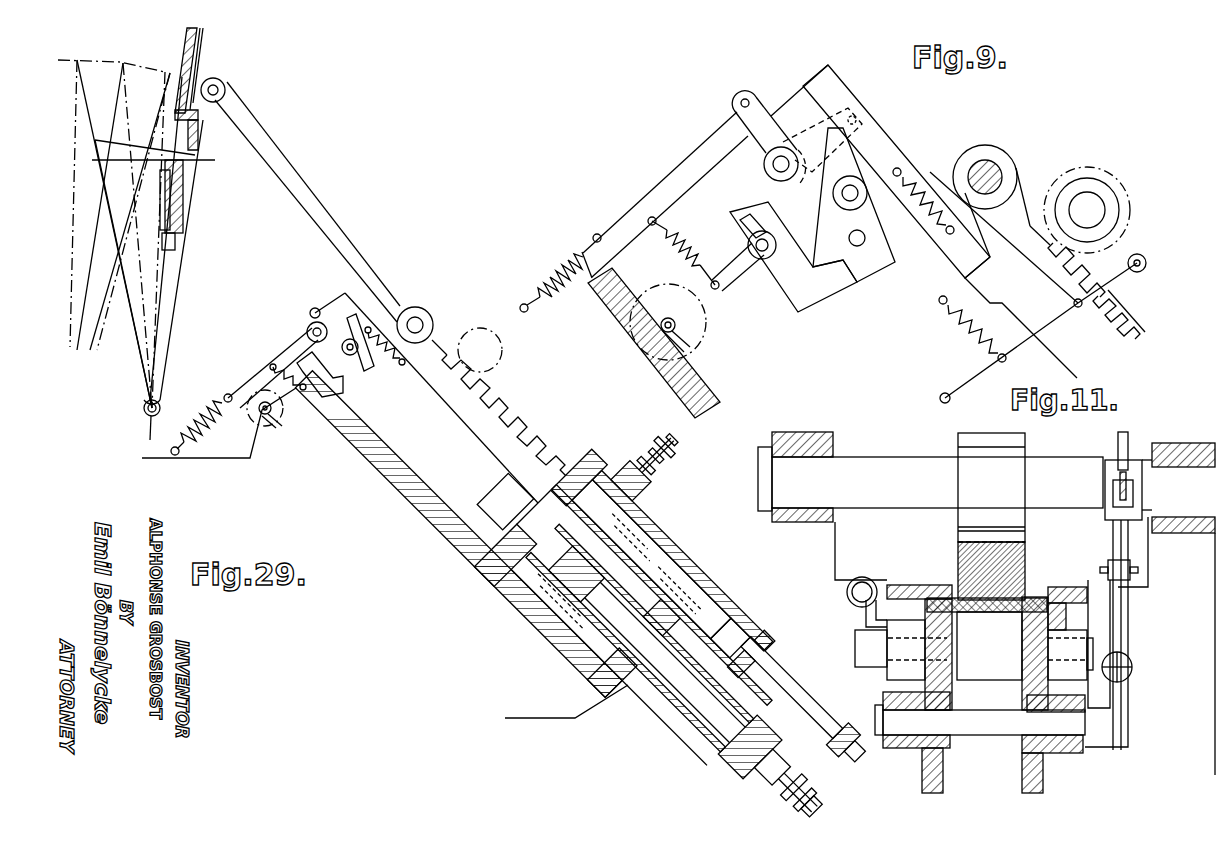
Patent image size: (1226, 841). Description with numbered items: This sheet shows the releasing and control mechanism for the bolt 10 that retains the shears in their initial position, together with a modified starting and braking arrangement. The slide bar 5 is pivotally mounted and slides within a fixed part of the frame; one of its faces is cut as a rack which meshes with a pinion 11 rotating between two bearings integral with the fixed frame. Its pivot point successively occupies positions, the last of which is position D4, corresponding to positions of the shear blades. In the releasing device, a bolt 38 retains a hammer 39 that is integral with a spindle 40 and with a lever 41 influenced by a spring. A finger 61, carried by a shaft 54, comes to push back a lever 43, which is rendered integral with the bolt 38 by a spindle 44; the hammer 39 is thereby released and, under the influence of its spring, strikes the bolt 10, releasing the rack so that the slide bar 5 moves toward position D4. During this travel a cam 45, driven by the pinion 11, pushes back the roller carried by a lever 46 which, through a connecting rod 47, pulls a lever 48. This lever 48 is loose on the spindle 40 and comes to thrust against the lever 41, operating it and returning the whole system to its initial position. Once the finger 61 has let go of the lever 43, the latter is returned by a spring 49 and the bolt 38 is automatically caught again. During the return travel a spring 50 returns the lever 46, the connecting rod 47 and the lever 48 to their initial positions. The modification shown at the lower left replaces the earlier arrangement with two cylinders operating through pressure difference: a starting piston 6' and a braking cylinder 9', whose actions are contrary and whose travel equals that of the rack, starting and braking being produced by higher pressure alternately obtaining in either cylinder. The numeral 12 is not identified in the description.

In FIG. 9, the slide bar 5 is at (1097, 337).
In FIG. 29, the slide bar 5 is at (503, 432).
In FIG. 29, the starting piston 6' is at (738, 590).
In FIG. 29, the braking cylinder 9' is at (576, 569).
In FIG. 9, the bolt 10 is at (884, 250).
In FIG. 11, the bolt 10 is at (970, 653).
In FIG. 9, the pinion 11 is at (1098, 197).
In FIG. 11, the pinion 11 is at (955, 479).
In FIG. 29, the pinion 11 is at (503, 352).
In FIG. 9, the spring 12 is at (560, 258).
In FIG. 9, the bolt 38 is at (745, 232).
In FIG. 9, the hammer 39 is at (815, 295).
In FIG. 9, the spindle 40 is at (778, 146).
In FIG. 29, the spindle 40 is at (373, 335).
In FIG. 9, the lever 41 is at (810, 177).
In FIG. 9, the lever 43 is at (728, 282).
In FIG. 9, the spindle 44 is at (762, 259).
In FIG. 9, the cam 45 is at (1117, 217).
In FIG. 11, the cam 45 is at (1127, 440).
In FIG. 9, the lever 46 is at (1053, 323).
In FIG. 11, the lever 46 is at (1124, 614).
In FIG. 9, the connecting rod 47 is at (1010, 250).
In FIG. 9, the lever 48 is at (820, 123).
In FIG. 9, the spring 49 is at (675, 256).
In FIG. 9, the spring 50 is at (963, 338).
In FIG. 11, the spring 50 is at (1135, 672).
In FIG. 9, the shaft 54 is at (640, 332).
In FIG. 9, the finger 61 is at (700, 340).
In FIG. 9, the position D4 is at (1001, 178).
In FIG. 29, the position D4 is at (425, 311).